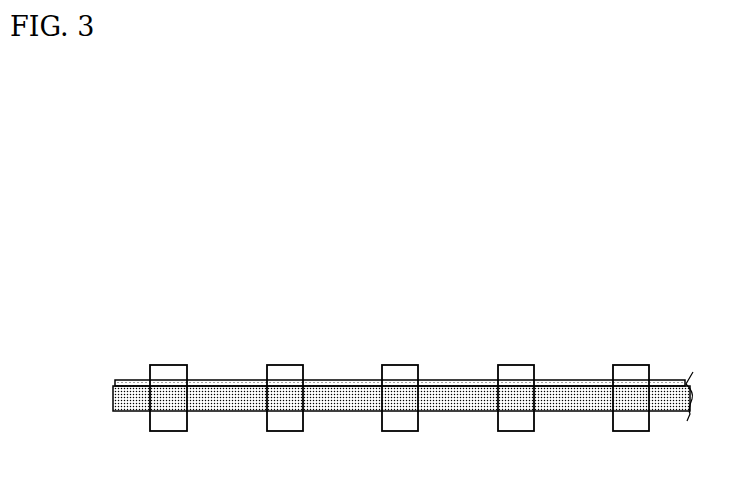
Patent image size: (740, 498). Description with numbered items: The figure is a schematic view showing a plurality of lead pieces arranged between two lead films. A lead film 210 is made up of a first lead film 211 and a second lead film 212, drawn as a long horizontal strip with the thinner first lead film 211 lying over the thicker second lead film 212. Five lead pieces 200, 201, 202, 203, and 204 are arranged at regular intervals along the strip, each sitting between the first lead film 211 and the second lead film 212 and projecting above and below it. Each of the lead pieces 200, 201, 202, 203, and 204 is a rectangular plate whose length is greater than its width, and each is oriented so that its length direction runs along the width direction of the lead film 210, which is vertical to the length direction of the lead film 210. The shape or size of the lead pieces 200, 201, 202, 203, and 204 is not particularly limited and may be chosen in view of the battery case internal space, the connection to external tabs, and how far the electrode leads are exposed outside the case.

The lead piece 200 is at (178, 377).
The lead piece 201 is at (293, 377).
The lead piece 202 is at (400, 377).
The lead piece 203 is at (514, 377).
The lead piece 204 is at (633, 377).
The lead film 210 is at (346, 384).
The first lead film 211 is at (128, 380).
The second lead film 212 is at (367, 408).